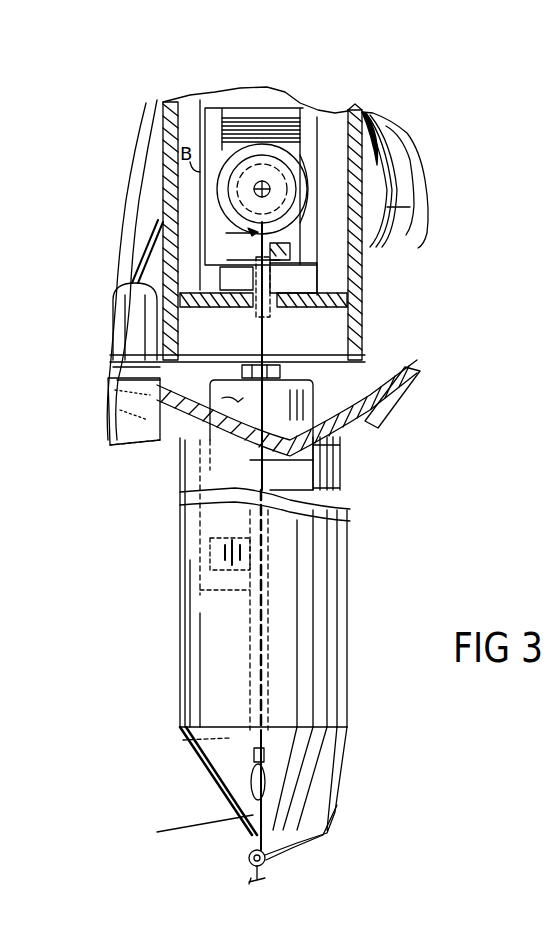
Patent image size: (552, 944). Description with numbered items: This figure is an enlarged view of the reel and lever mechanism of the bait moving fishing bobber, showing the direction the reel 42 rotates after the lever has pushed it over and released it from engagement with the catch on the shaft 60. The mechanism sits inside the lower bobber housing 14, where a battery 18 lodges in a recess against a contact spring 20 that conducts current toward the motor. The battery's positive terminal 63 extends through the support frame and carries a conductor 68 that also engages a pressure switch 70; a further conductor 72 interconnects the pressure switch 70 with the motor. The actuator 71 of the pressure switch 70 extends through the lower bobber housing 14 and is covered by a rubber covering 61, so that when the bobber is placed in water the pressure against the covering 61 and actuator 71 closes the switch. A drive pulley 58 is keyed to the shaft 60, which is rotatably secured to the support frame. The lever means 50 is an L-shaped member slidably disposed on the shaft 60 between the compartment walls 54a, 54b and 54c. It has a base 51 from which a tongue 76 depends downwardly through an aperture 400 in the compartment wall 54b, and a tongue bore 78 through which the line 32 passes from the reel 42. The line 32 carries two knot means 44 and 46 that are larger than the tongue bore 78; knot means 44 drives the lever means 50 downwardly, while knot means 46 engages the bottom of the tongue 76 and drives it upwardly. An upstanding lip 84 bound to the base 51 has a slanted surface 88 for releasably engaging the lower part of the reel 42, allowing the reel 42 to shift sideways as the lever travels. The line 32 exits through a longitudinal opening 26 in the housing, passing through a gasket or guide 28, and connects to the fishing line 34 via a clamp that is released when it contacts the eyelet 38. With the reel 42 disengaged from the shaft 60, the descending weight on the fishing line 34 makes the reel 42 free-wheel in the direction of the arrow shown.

The lower bobber housing 14 is at (340, 615).
The battery 18 is at (170, 480).
The contact spring 20 is at (347, 568).
The longitudinal opening 26 is at (310, 463).
The gasket or guide 28 is at (347, 713).
The line 32 is at (180, 508).
The fishing line 34 is at (323, 832).
The eyelet 38 is at (250, 860).
The reel 42 is at (264, 185).
The knot means 44 is at (310, 217).
The knot means 46 is at (177, 747).
The lever means 50 is at (270, 257).
The base 51 is at (250, 275).
The compartment wall 54a is at (275, 221).
The compartment wall 54b is at (265, 301).
The compartment wall 54c is at (212, 138).
The drive pulley 58 is at (347, 147).
The shaft 60 is at (302, 138).
The rubber covering 61 is at (113, 417).
The positive terminal 63 is at (320, 410).
The conductor 68 is at (130, 352).
The pressure switch 70 is at (120, 300).
The actuator 71 is at (120, 443).
The conductor 72 is at (133, 263).
The tongue 76 is at (320, 360).
The tongue bore 78 is at (270, 326).
The upstanding lip 84 is at (207, 231).
The slanted surface 88 is at (258, 232).
The aperture 400 is at (133, 380).